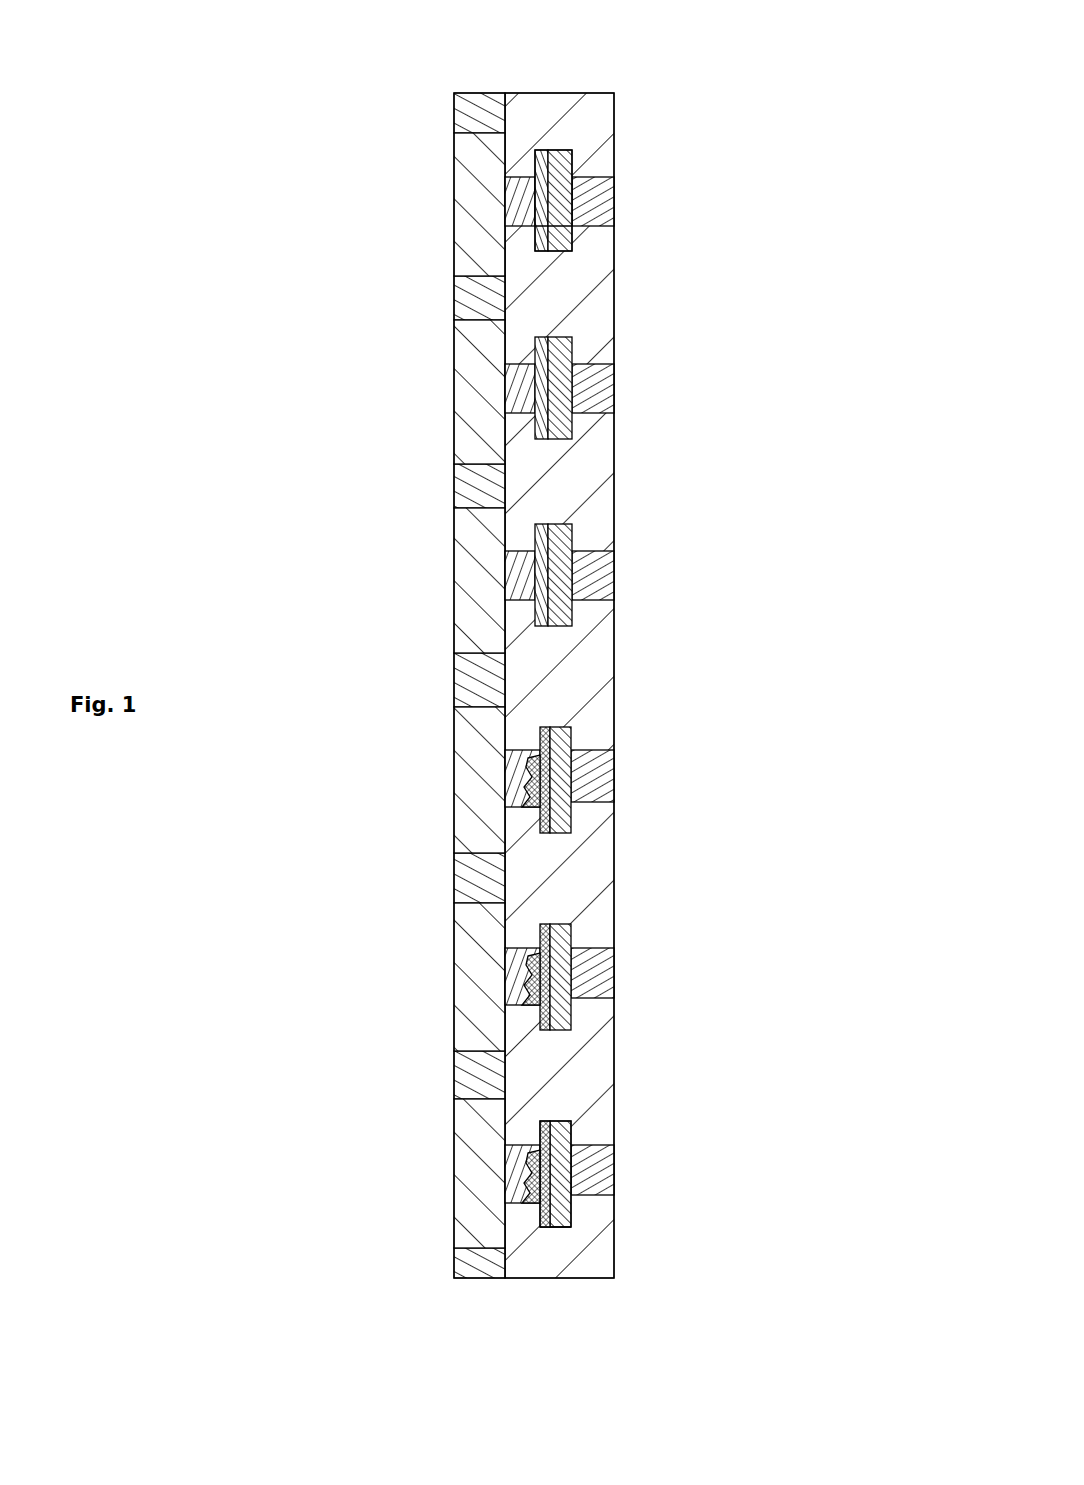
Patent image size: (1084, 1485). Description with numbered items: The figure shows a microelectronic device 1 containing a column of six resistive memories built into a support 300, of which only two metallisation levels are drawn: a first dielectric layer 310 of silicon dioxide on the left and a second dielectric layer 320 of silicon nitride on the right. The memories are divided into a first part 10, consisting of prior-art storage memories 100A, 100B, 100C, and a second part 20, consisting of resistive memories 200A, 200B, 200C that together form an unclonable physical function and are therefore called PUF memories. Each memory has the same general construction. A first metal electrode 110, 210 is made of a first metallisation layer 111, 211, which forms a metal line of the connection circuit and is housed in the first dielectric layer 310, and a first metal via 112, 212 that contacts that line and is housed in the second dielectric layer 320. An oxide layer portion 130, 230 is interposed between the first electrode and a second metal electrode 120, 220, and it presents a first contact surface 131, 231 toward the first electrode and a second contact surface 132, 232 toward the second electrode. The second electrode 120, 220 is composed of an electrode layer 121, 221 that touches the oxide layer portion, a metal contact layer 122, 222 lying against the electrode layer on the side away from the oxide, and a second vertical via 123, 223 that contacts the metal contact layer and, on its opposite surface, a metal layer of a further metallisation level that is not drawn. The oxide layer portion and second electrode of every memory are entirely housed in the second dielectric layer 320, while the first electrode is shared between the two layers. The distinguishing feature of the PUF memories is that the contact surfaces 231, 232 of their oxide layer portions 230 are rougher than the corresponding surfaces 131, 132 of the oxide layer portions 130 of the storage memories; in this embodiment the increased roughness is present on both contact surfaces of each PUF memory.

The microelectronic device 1 is at (553, 704).
The first part 10 is at (555, 334).
The second part 20 is at (553, 991).
The resistive memory 100A is at (507, 146).
The resistive memory 100B is at (660, 352).
The resistive memory 100C is at (570, 563).
The first metal electrode 110 is at (421, 204).
The first metallisation layer 111 is at (463, 173).
The first metal via 112 is at (507, 208).
The second metal electrode 120 is at (602, 133).
The electrode layer 121 is at (560, 150).
The metal contact layer 122 is at (598, 177).
The second vertical via 123 is at (572, 150).
The oxide layer portion 130 is at (598, 136).
The first contact surface 131 is at (528, 143).
The second contact surface 132 is at (560, 240).
The resistive memory 200A is at (640, 776).
The resistive memory 200B is at (640, 958).
The resistive memory 200C is at (522, 1149).
The first metal electrode 210 is at (421, 1173).
The first metallisation layer 211 is at (465, 1155).
The first metal via 212 is at (512, 1186).
The second metal electrode 220 is at (641, 1190).
The electrode layer 221 is at (560, 1203).
The metal contact layer 222 is at (609, 1238).
The second vertical via 223 is at (600, 1172).
The oxide layer portion 230 is at (532, 1162).
The first contact surface 231 is at (520, 1127).
The second contact surface 232 is at (600, 1163).
The support 300 is at (534, 742).
The first dielectric layer 310 is at (479, 719).
The second dielectric layer 320 is at (557, 1256).